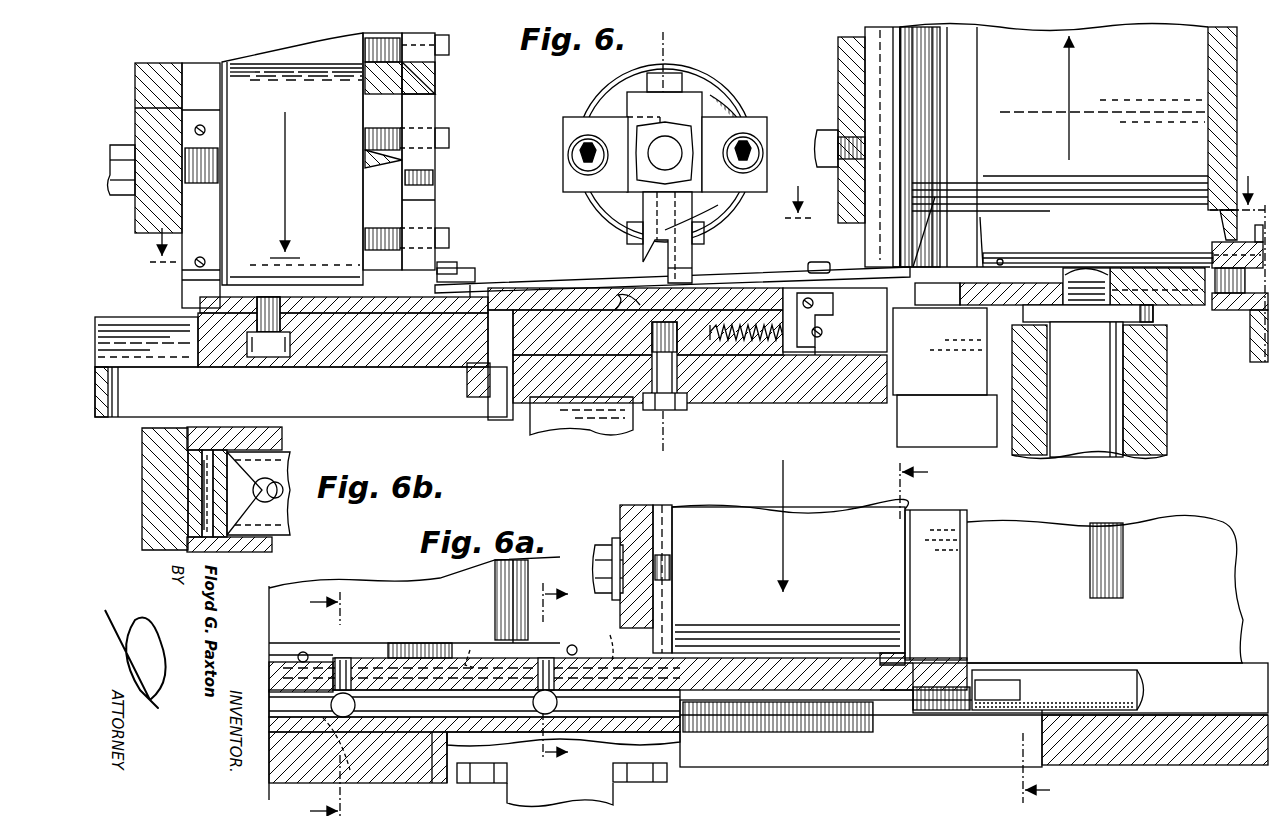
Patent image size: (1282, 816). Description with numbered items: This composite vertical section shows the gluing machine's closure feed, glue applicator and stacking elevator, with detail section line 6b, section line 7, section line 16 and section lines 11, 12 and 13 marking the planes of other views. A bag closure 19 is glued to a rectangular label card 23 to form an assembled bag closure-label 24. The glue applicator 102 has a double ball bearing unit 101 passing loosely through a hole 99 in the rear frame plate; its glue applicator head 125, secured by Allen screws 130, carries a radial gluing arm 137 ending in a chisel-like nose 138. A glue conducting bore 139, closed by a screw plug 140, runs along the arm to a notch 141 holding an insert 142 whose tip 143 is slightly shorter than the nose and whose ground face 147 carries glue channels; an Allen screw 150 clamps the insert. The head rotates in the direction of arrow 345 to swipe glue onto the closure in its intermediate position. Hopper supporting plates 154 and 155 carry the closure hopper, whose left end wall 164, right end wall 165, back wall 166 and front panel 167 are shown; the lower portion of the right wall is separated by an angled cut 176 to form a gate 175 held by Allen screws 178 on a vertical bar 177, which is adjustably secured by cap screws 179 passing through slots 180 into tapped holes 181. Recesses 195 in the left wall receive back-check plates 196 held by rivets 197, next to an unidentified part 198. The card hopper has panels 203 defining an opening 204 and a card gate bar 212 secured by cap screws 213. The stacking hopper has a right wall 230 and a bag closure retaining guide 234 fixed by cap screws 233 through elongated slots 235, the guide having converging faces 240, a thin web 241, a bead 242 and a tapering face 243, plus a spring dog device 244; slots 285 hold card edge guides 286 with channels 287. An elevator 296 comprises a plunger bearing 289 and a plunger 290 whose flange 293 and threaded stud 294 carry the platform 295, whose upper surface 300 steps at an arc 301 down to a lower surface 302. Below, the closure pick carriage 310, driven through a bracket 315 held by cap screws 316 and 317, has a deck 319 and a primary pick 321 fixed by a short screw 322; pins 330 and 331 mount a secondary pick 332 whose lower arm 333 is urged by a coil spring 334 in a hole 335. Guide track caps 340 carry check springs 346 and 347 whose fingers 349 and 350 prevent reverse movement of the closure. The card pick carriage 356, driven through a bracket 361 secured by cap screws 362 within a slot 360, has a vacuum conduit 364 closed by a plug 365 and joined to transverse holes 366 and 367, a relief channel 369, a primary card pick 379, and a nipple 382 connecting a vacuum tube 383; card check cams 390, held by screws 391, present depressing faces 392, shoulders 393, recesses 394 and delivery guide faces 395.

In FIG. 6, the section line 7- 7 is at (655, 42).
In FIG. 6, the section line 6b— 6b is at (214, 187).
In FIG. 6, the section line 16— 16 is at (1023, 261).
In FIG. 6a, the section line 11— 11 is at (988, 633).
In FIG. 6a, the section line 12— 12 is at (564, 670).
In FIG. 6a, the section line 13— 13 is at (310, 704).
In FIG. 6, the bag closure 19 is at (248, 60).
In FIG. 6b, the bag closure 19 is at (292, 512).
In FIG. 6, the label card 23 is at (1095, 262).
In FIG. 6a, the label card 23 is at (375, 658).
In FIG. 6, the assembled bag closure-label 24 is at (1125, 180).
In FIG. 6, the hole 99 is at (590, 107).
In FIG. 6, the double ball bearing unit 101 is at (700, 85).
In FIG. 6, the glue applicator 102 is at (760, 100).
In FIG. 6, the glue applicator head 125 is at (728, 90).
In FIG. 6, the Allen screws 130 is at (572, 152).
In FIG. 6, the gluing arm 137 is at (718, 205).
In FIG. 6, the nose 138 is at (645, 290).
In FIG. 6, the liquid glue conducting bore 139 is at (655, 117).
In FIG. 6, the screw plug 140 is at (647, 78).
In FIG. 6, the notch 141 is at (704, 232).
In FIG. 6, the insert 142 is at (694, 270).
In FIG. 6, the tip of insert 143 is at (668, 292).
In FIG. 6, the ground face 147 is at (655, 245).
In FIG. 6, the Allen screw 150 is at (628, 236).
In FIG. 6, the hopper supporting plate 154 is at (150, 146).
In FIG. 6b, the hopper supporting plate 154 is at (150, 450).
In FIG. 6a, the hopper supporting plate 155 is at (640, 508).
In FIG. 6, the left end wall 164 is at (195, 70).
In FIG. 6b, the left end wall 164 is at (195, 482).
In FIG. 6, the right end wall 165 is at (395, 118).
In FIG. 6b, the back wall 166 is at (275, 435).
In FIG. 6b, the front panel 167 is at (275, 545).
In FIG. 6, the closure hopper gate 175 is at (395, 195).
In FIG. 6, the angled cut 176 is at (420, 80).
In FIG. 6, the vertical bar 177 is at (420, 213).
In FIG. 6, the Allen screws 178 is at (450, 136).
In FIG. 6, the cap screws 179 is at (440, 50).
In FIG. 6, the slots 180 is at (442, 40).
In FIG. 6, the tapped holes 181 is at (365, 45).
In FIG. 6, the recesses 195 is at (170, 112).
In FIG. 6, the back-check plates 196 is at (185, 288).
In FIG. 6b, the back-check plates 196 is at (200, 452).
In FIG. 6, the rivets 197 is at (206, 130).
In FIG. 6b, the rivets 197 is at (205, 508).
In FIG. 6, the base 198 is at (185, 300).
In FIG. 6a, the panels 203 is at (965, 512).
In FIG. 6a, the opening 204 is at (940, 580).
In FIG. 6a, the card gate bar 212 is at (665, 508).
In FIG. 6a, the cap screws 213 is at (610, 540).
In FIG. 6, the right wall 230 is at (1210, 58).
In FIG. 6, the cap screws 233 is at (818, 148).
In FIG. 6, the bag closure retaining guide 234 is at (845, 70).
In FIG. 6, the elongated slots 235 is at (838, 178).
In FIG. 6, the converging faces 240 is at (918, 105).
In FIG. 6, the web 241 is at (930, 78).
In FIG. 6, the bead 242 is at (948, 125).
In FIG. 6, the tapering face 243 is at (933, 230).
In FIG. 6, the spring dog device 244 is at (910, 428).
In FIG. 6, the horizontal slots 285 is at (1000, 258).
In FIG. 6, the card edge guides 286 is at (1118, 258).
In FIG. 6, the card edge guide channels 287 is at (1155, 258).
In FIG. 6, the elevator plunger bearing 289 is at (1160, 428).
In FIG. 6, the elevator plunger 290 is at (1120, 405).
In FIG. 6, the flange 293 is at (1150, 322).
In FIG. 6, the threaded stud 294 is at (1090, 305).
In FIG. 6, the elevator platform 295 is at (975, 300).
In FIG. 6, the elevator 296 is at (1003, 342).
In FIG. 6, the uppermost surface 300 is at (1183, 290).
In FIG. 6, the arc 301 is at (1065, 268).
In FIG. 6, the surface 302 is at (1030, 268).
In FIG. 6, the pick carriage 310 is at (332, 355).
In FIG. 6, the drive bracket 315 is at (538, 428).
In FIG. 6, the cap screw 316 is at (490, 400).
In FIG. 6, the cap screw 317 is at (688, 402).
In FIG. 6, the deck 319 is at (762, 282).
In FIG. 6, the primary closure pick 321 is at (370, 306).
In FIG. 6b, the primary closure pick 321 is at (290, 465).
In FIG. 6, the short cap screw 322 is at (272, 345).
In FIG. 6, the pin 330 is at (815, 300).
In FIG. 6, the pin 331 is at (823, 332).
In FIG. 6, the secondary closure pick 332 is at (835, 268).
In FIG. 6, the lower arm 333 is at (803, 348).
In FIG. 6, the coil spring 334 is at (740, 342).
In FIG. 6, the hole 335 is at (770, 345).
In FIG. 6, the guide track caps 340 is at (445, 290).
In FIG. 6, the arrow 345 is at (625, 210).
In FIG. 6, the closure check spring 346 is at (472, 295).
In FIG. 6, the closure check spring 347 is at (470, 270).
In FIG. 6, the fingers 349 is at (548, 282).
In FIG. 6, the fingers 350 is at (600, 282).
In FIG. 6a, the label card pick carriage 356 is at (772, 718).
In FIG. 6a, the longitudinal slot 360 is at (1042, 770).
In FIG. 6a, the bracket 361 is at (620, 790).
In FIG. 6a, the cap screws 362 is at (478, 785).
In FIG. 6a, the vacuum conduit hole 364 is at (850, 705).
In FIG. 6, the plug 365 is at (1232, 305).
In FIG. 6a, the transverse hole 366 is at (356, 706).
In FIG. 6a, the transverse hole 367 is at (558, 704).
In FIG. 6a, the vacuum relief channel 369 is at (355, 772).
In FIG. 6a, the primary card pick 379 is at (905, 652).
In FIG. 6a, the nipple 382 is at (965, 668).
In FIG. 6a, the vacuum tube 383 is at (1072, 672).
In FIG. 6a, the card check cams 390 is at (430, 652).
In FIG. 6a, the screws 391 is at (303, 652).
In FIG. 6a, the card edge depressing faces 392 is at (609, 639).
In FIG. 6a, the card check shoulders 393 is at (560, 660).
In FIG. 6a, the card check recesses 394 is at (470, 652).
In FIG. 6a, the card delivery guide faces 395 is at (330, 665).